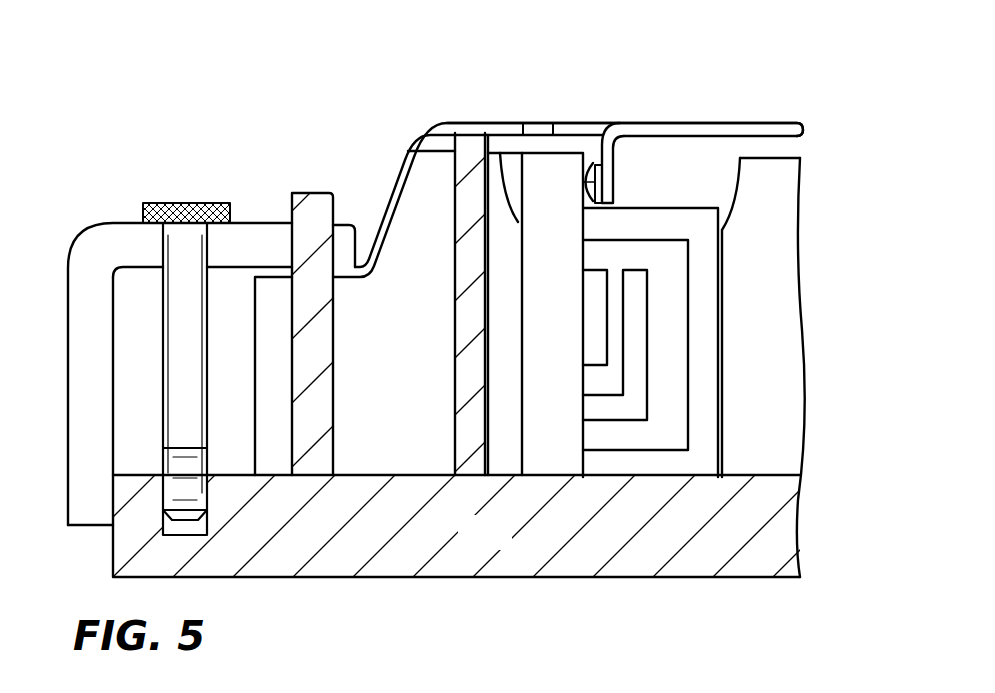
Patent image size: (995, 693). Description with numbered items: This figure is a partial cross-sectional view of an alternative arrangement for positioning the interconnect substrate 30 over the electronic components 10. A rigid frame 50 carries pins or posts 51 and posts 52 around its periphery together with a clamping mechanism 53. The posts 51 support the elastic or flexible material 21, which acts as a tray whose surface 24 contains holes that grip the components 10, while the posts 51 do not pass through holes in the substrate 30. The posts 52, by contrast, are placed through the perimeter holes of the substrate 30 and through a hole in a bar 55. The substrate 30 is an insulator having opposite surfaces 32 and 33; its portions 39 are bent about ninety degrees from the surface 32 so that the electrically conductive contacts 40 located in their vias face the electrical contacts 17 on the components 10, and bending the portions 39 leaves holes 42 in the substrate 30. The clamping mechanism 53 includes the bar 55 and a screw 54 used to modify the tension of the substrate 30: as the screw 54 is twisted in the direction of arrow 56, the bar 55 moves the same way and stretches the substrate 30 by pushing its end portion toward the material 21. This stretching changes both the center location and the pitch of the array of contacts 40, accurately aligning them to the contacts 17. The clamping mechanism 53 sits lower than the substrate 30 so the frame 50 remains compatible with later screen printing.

The components 10 is at (742, 254).
The electrical contacts 17 is at (588, 181).
The elastic or flexible material 21 is at (779, 367).
The surface 24 is at (792, 153).
The interconnect substrate 30 is at (402, 170).
The surface 32 is at (723, 140).
The surface 33 is at (767, 125).
The portions 39 is at (614, 193).
The electrically conductive contacts 40 is at (623, 133).
The holes 42 is at (582, 123).
The rigid frame 50 is at (497, 546).
The posts 51 is at (470, 135).
The posts 52 is at (313, 192).
The clamping mechanism 53 is at (156, 329).
The screw 54 is at (192, 202).
The bar 55 is at (68, 368).
The arrow 56 is at (228, 378).